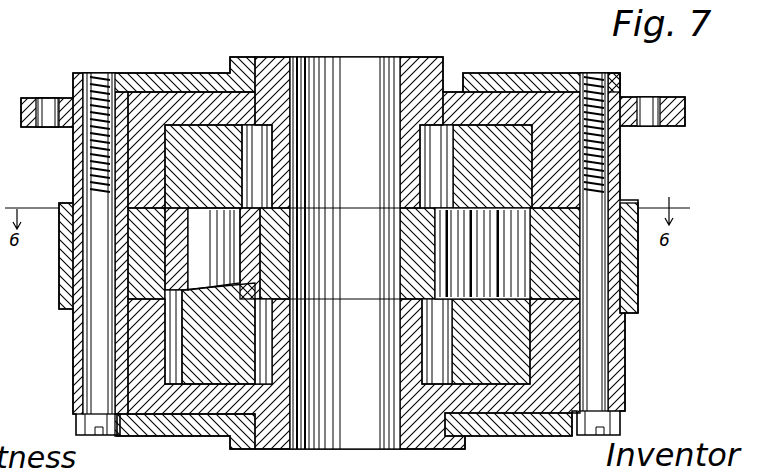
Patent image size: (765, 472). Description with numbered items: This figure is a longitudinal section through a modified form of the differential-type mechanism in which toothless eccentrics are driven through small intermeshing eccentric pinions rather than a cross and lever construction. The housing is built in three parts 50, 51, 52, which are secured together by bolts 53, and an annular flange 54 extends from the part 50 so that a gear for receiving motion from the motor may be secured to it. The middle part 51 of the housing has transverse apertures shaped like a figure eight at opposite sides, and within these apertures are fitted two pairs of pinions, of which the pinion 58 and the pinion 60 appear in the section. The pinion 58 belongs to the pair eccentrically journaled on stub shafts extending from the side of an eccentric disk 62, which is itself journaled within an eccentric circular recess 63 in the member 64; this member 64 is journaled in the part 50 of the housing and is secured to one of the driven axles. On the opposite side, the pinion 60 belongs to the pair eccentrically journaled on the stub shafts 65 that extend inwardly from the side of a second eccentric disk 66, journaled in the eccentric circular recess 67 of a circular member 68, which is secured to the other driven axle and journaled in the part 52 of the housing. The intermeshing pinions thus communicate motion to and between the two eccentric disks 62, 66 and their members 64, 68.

The housing part 50 is at (492, 75).
The housing part 51 is at (640, 278).
The housing part 52 is at (537, 436).
The bolts 53 is at (612, 205).
The annular flange 54 is at (676, 98).
The pinion 58 is at (455, 262).
The pinion 60 is at (305, 233).
The eccentric disk 62 is at (193, 133).
The eccentric circular recess 63 is at (172, 153).
The member 64 is at (412, 72).
The stub shafts 65 is at (210, 258).
The eccentric disk 66 is at (210, 333).
The eccentric circular recess 67 is at (522, 374).
The circular member 68 is at (585, 346).